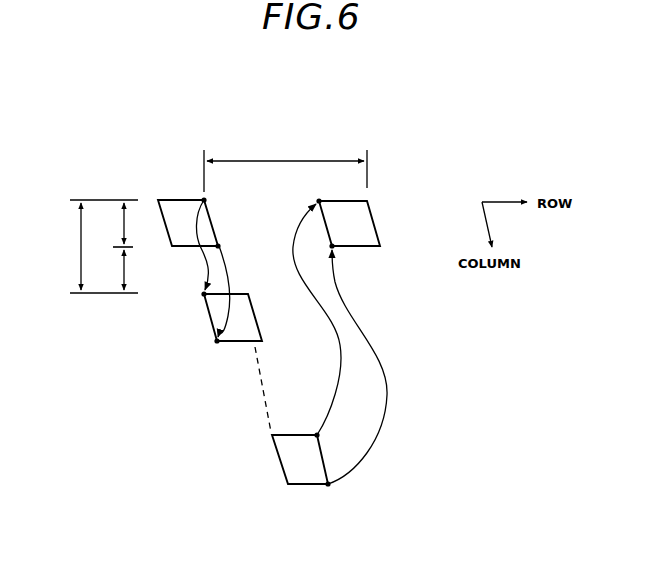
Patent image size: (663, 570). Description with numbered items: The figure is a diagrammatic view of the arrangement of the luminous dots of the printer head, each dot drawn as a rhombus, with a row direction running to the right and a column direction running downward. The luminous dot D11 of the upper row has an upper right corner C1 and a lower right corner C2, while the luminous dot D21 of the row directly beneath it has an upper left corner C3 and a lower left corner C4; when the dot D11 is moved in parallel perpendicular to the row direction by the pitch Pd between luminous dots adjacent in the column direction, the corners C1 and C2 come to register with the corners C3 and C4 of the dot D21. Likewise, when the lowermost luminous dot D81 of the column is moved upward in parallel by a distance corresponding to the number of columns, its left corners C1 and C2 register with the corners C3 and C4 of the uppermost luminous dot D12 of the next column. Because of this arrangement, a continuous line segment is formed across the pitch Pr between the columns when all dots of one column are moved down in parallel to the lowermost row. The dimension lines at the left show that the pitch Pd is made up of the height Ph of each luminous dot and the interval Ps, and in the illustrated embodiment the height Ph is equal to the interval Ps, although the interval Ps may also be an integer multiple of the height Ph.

The luminous dot D11 is at (175, 210).
The uppermost luminous dot of the next column D12 is at (362, 230).
The luminous dot of the row directly thereunder D21 is at (240, 333).
The lowermost luminous dot D81 is at (290, 462).
The upper right corner C1 is at (271, 321).
The lower right corner C2 is at (285, 370).
The upper left corner C3 is at (249, 246).
The lower left corner C4 is at (262, 294).
The pitch between luminous dots adjacent in the column direction Pd is at (97, 246).
The height of each luminous dot Ph is at (131, 225).
The interval between each adjacent two columns Ps is at (136, 270).
The pitch between the columns Pr is at (285, 168).